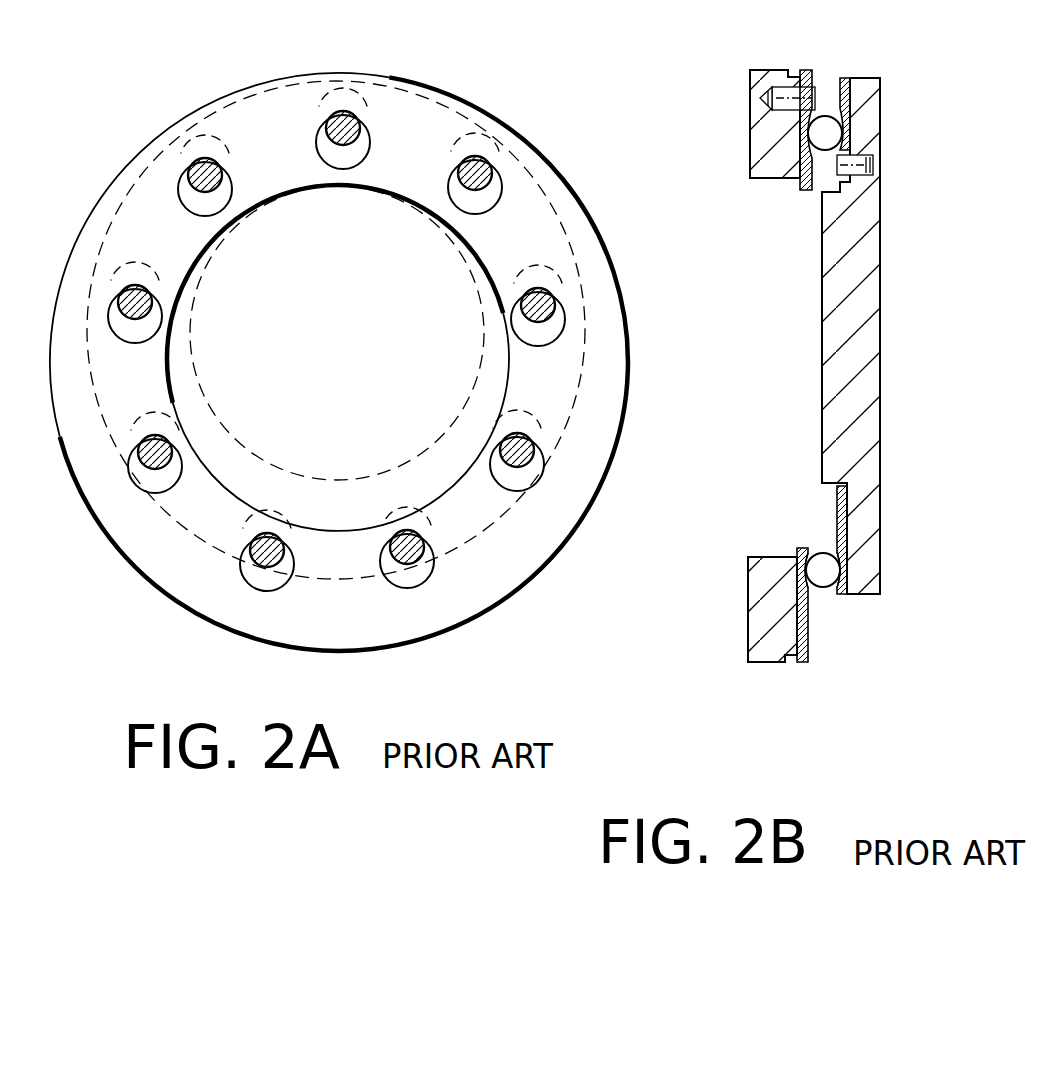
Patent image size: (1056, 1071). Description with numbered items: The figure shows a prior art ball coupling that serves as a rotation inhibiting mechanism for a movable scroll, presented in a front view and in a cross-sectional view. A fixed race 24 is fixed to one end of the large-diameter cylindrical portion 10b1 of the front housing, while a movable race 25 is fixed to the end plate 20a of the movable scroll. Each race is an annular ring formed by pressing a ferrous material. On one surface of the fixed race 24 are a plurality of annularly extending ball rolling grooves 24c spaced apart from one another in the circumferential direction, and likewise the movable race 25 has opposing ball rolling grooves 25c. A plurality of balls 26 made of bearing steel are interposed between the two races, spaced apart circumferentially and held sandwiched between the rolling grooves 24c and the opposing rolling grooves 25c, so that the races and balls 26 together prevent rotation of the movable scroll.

In FIG. 2A, the fixed race 24 is at (527, 143).
In FIG. 2B, the fixed race 24 is at (805, 665).
In FIG. 2A, the ball rolling grooves 24c is at (565, 327).
In FIG. 2B, the ball rolling grooves 24c is at (815, 597).
In FIG. 2A, the movable race 25 is at (550, 207).
In FIG. 2B, the movable race 25 is at (857, 597).
In FIG. 2A, the ball rolling grooves 25c is at (560, 262).
In FIG. 2B, the ball rolling grooves 25c is at (836, 545).
In FIG. 2A, the balls 26 is at (560, 297).
In FIG. 2B, the balls 26 is at (837, 593).
In FIG. 2B, the large-diameter cylindrical portion 10b1 is at (763, 667).
In FIG. 2B, the end plate 20a is at (865, 600).